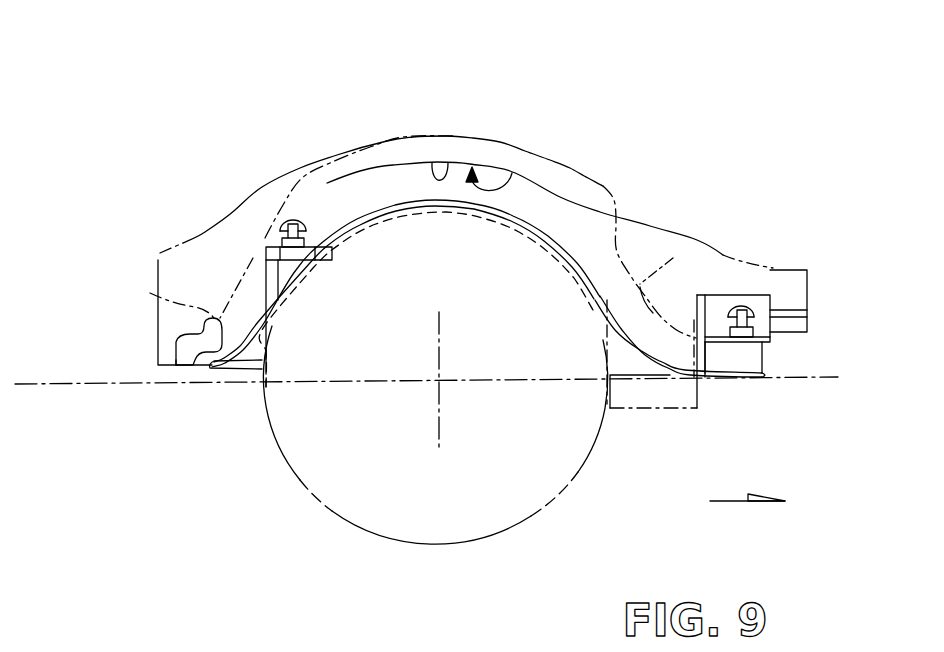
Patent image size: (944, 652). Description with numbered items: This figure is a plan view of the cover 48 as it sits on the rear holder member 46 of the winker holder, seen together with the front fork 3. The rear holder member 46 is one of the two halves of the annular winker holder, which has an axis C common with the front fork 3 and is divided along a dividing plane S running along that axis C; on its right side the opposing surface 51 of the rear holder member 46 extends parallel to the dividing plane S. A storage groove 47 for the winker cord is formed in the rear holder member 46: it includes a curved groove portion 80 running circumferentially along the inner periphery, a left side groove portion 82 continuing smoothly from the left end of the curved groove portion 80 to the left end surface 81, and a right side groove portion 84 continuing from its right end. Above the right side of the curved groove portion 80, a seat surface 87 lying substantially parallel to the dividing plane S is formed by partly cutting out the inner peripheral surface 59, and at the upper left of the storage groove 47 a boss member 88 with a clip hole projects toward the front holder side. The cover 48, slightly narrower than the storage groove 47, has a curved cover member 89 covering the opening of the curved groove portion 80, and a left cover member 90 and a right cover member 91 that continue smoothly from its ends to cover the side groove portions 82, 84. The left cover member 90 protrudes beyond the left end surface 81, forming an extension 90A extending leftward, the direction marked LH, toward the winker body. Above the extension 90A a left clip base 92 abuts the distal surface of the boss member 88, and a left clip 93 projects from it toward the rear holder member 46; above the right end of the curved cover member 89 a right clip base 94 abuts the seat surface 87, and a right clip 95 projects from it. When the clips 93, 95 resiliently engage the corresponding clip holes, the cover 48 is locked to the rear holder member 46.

The front fork 3 is at (570, 483).
The rear holder member 46 is at (572, 166).
The storage groove 47 is at (512, 173).
The cover 48 is at (520, 211).
The opposing surface 51 is at (156, 357).
The inner peripheral surface 59 is at (580, 284).
The curved groove portion 80 is at (450, 158).
The left end surface 81 is at (706, 313).
The left side groove portion 82 is at (673, 258).
The right side groove portion 84 is at (153, 298).
The seat surface 87 is at (318, 262).
The boss member 88 is at (808, 312).
The curved cover member 89 is at (413, 208).
The left cover member 90 is at (672, 378).
The extension 90A is at (740, 378).
The right cover member 91 is at (231, 370).
The left clip base 92 is at (772, 340).
The left clip 93 is at (757, 310).
The right clip base 94 is at (266, 251).
The right clip 95 is at (281, 226).
The axis C is at (440, 382).
The dividing plane S is at (834, 380).
The left-hand direction LH is at (770, 500).